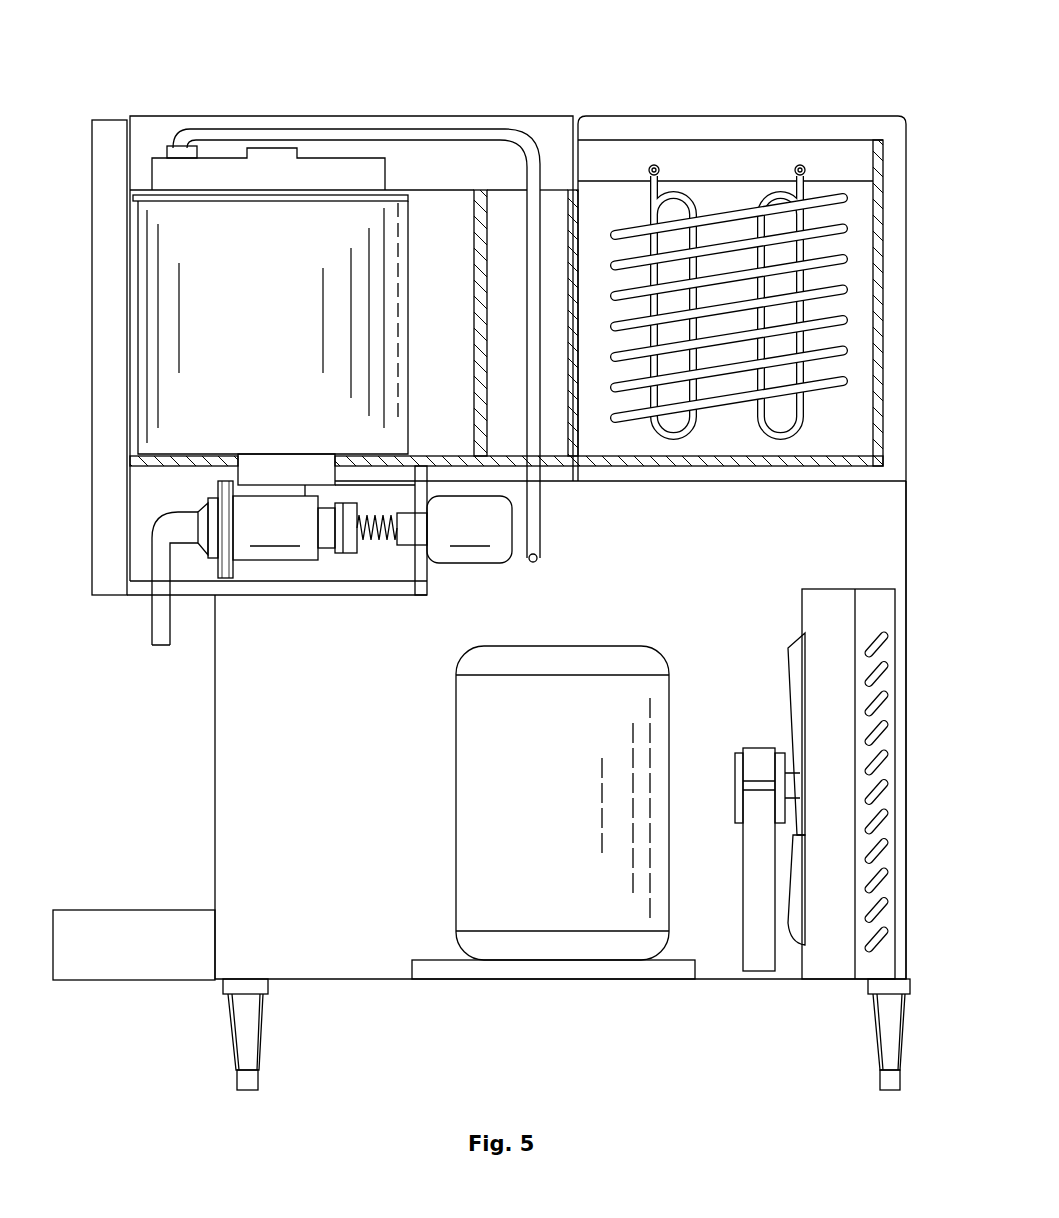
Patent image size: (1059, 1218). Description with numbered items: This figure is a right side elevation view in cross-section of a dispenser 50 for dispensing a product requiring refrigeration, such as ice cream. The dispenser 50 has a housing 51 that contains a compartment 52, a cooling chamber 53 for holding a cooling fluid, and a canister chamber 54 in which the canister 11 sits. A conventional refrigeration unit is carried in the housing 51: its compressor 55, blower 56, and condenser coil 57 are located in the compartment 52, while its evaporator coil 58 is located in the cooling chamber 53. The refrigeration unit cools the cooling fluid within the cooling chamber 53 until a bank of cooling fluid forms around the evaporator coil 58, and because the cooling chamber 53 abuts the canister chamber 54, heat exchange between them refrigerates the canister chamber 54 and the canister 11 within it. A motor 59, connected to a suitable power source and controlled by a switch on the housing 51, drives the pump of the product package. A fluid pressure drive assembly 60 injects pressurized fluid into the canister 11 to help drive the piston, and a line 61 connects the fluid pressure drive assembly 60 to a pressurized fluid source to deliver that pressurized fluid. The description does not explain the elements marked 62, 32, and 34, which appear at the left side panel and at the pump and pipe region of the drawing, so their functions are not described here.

The dispenser 50 is at (774, 78).
The side panel 62 is at (110, 122).
The line 61 is at (303, 131).
The fluid pressure drive assembly 60 is at (363, 172).
The canister 11 is at (258, 338).
The canister chamber 54 is at (427, 328).
The evaporator coil 58 is at (718, 218).
The cooling chamber 53 is at (714, 446).
The outlet pipe 32 is at (167, 520).
The pump valve assembly 34 is at (382, 540).
The motor 59 is at (467, 563).
The housing 51 is at (905, 535).
The compartment 52 is at (332, 784).
The compressor 55 is at (617, 647).
The blower 56 is at (788, 675).
The condenser coil 57 is at (873, 591).